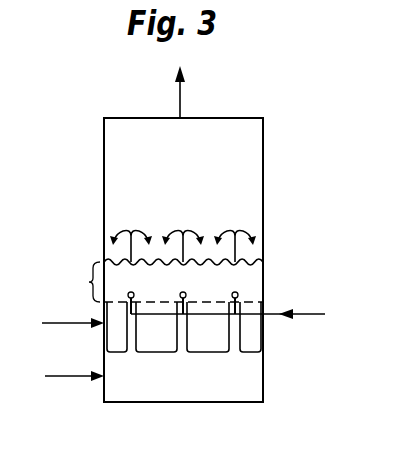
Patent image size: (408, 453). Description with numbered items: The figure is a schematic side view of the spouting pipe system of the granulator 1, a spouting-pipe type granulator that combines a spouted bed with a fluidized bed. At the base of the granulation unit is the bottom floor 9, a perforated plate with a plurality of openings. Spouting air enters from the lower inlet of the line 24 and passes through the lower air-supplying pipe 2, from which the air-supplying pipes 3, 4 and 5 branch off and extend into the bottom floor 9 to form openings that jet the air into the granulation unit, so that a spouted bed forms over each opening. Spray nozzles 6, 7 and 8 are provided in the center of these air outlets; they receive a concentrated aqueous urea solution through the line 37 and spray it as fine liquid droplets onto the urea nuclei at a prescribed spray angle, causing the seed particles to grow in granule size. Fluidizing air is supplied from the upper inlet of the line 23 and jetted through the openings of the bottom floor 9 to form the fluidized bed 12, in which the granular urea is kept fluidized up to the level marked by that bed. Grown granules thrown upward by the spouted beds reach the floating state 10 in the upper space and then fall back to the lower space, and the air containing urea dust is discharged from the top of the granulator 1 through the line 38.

The granulator 1 is at (265, 152).
The lower air-supplying pipe 2 is at (152, 402).
The air-supplying pipe 3 is at (138, 337).
The air-supplying pipe 4 is at (188, 337).
The air-supplying pipe 5 is at (243, 335).
The spray nozzle 6 is at (129, 292).
The spray nozzle 7 is at (184, 292).
The spray nozzle 8 is at (237, 292).
The bottom floor 9 is at (262, 299).
The floating state 10 is at (138, 231).
The fluidized bed 12 is at (89, 282).
The line 23 is at (72, 323).
The line 24 is at (72, 376).
The line 37 is at (308, 315).
The line 38 is at (181, 96).